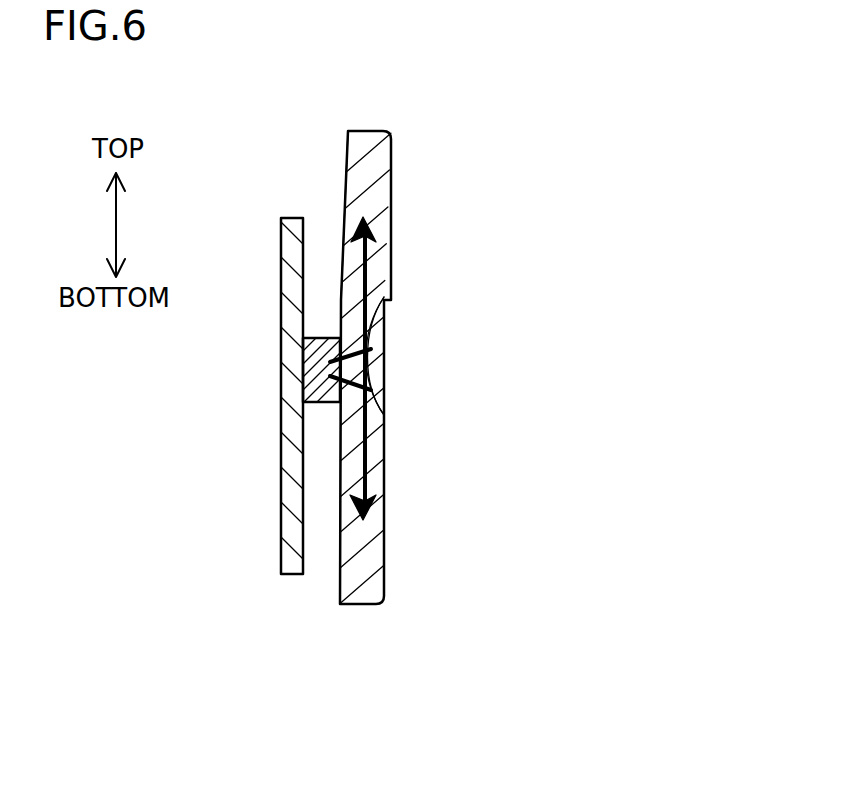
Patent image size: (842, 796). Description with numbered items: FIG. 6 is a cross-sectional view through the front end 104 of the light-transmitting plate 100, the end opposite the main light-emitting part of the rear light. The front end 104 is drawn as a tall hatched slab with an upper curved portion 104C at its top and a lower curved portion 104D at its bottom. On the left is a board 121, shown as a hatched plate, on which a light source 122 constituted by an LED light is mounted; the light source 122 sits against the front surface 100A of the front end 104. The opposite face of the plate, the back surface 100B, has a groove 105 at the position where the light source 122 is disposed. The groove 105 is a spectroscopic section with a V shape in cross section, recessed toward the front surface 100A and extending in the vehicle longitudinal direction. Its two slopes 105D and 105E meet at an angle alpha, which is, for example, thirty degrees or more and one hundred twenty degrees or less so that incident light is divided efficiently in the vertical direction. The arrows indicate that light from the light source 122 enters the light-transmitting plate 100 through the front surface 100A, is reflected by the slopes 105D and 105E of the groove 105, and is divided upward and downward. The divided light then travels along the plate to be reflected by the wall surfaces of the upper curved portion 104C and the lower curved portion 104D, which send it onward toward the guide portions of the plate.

The front end 104 is at (380, 155).
The light-transmitting plate 100 is at (344, 367).
The upper curved portion 104C is at (367, 131).
The lower curved portion 104D is at (358, 605).
The front surface 100A is at (343, 182).
The back surface 100B is at (385, 212).
The groove 105 is at (380, 335).
The slope 105D is at (372, 350).
The slope 105E is at (377, 398).
The angle alpha is at (376, 372).
The board 121 is at (280, 273).
The light source 122 is at (326, 403).